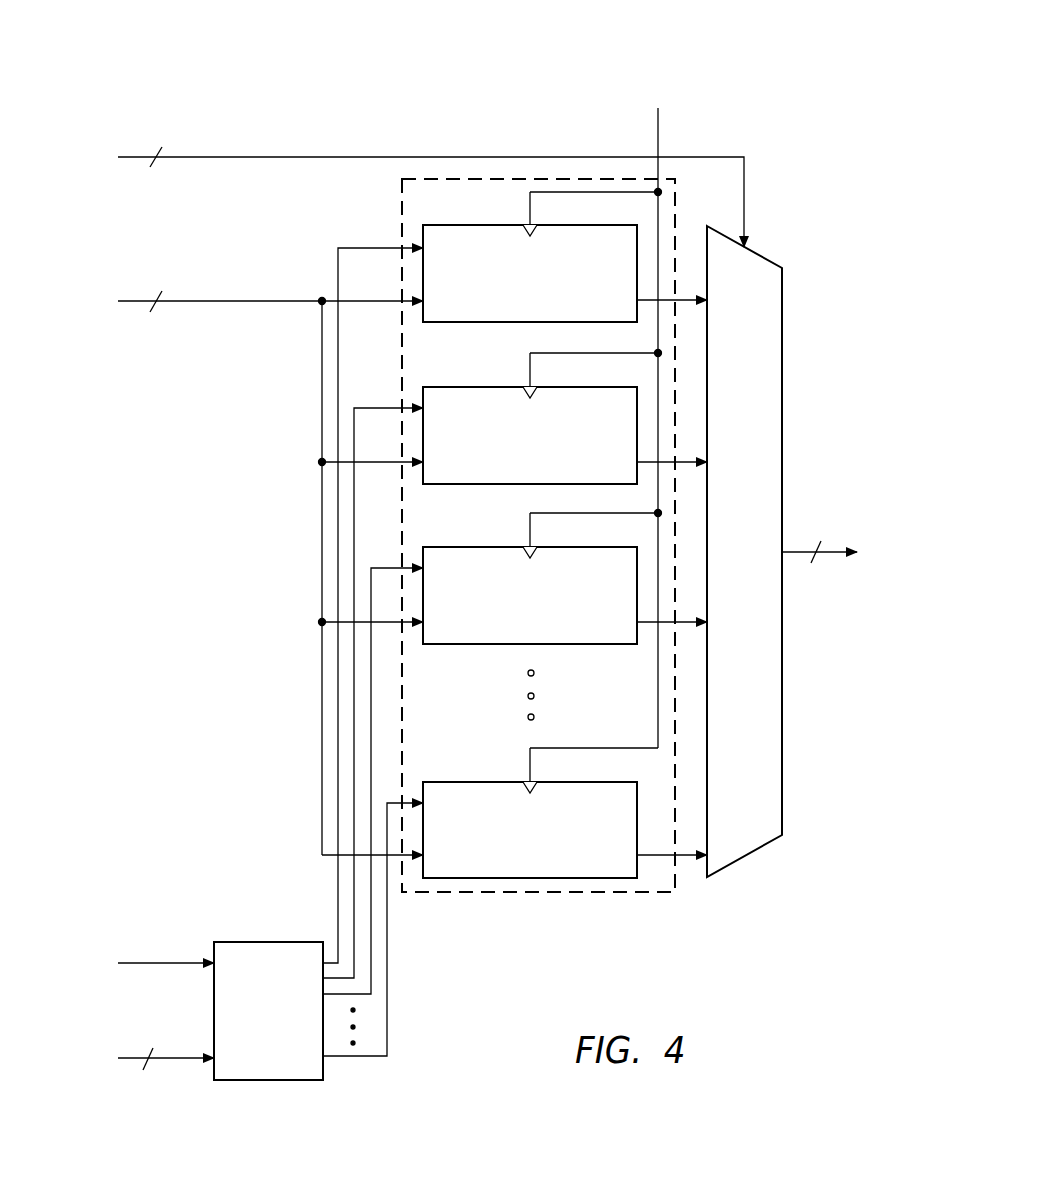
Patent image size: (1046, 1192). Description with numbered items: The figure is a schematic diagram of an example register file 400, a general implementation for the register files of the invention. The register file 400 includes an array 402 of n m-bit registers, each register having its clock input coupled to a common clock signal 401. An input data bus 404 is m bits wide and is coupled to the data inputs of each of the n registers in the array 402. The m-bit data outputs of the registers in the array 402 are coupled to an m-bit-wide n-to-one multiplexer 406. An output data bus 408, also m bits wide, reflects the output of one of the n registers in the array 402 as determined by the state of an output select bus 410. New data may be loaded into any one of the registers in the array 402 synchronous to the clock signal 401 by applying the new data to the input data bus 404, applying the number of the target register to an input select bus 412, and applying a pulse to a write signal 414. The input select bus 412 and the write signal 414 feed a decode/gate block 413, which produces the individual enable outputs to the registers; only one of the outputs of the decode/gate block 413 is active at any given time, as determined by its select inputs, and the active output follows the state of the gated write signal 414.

The register file 400 is at (342, 55).
The clock signal 401 is at (660, 133).
The array 402 is at (612, 892).
The input data bus 404 is at (241, 301).
The n:1 multiplexer 406 is at (745, 855).
The output data bus 408 is at (797, 552).
The output select bus 410 is at (241, 157).
The input select bus 412 is at (187, 1061).
The decode/gate block 413 is at (268, 1081).
The write signal 414 is at (165, 963).